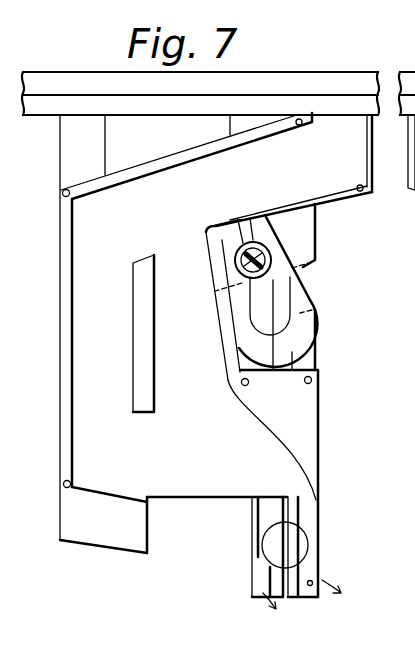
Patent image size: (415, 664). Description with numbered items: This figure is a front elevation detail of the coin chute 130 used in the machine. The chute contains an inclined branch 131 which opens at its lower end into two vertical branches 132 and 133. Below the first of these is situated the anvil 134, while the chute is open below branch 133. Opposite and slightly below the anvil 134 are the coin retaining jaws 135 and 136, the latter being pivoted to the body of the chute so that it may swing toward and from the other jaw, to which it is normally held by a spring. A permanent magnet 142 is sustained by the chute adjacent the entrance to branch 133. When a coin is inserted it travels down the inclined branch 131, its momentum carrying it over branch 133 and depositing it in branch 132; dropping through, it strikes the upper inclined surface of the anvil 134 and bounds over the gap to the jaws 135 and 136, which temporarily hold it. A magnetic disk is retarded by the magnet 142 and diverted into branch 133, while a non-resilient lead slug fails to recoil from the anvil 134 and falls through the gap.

The coin chute 130 is at (218, 394).
The inclined branch 131 is at (216, 166).
The vertical branch 132 is at (118, 333).
The vertical branch 133 is at (211, 299).
The anvil 134 is at (103, 520).
The coin retaining jaw 135 is at (412, 547).
The coin retaining jaw 136 is at (262, 573).
The permanent magnet 142 is at (304, 312).